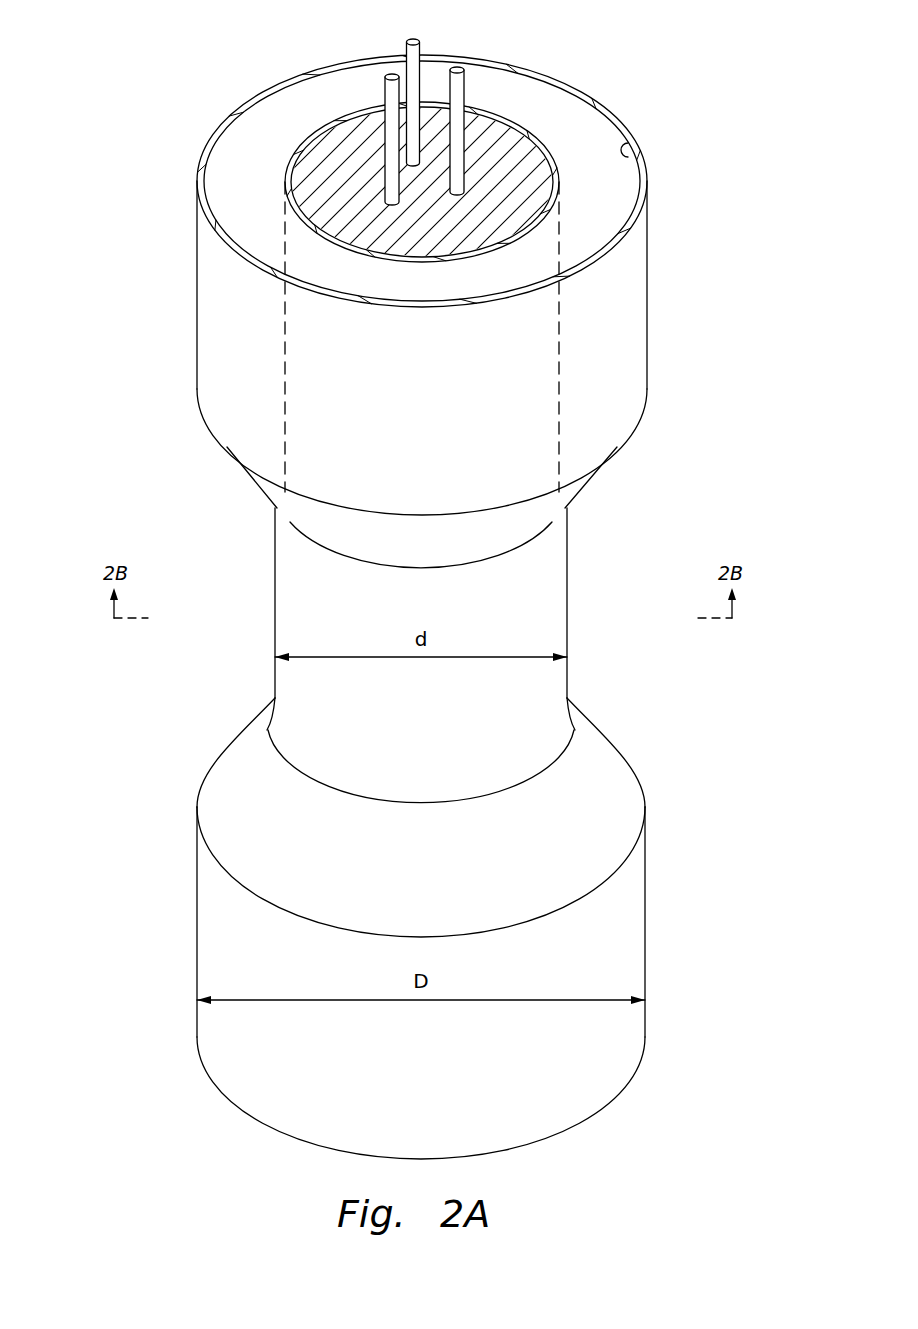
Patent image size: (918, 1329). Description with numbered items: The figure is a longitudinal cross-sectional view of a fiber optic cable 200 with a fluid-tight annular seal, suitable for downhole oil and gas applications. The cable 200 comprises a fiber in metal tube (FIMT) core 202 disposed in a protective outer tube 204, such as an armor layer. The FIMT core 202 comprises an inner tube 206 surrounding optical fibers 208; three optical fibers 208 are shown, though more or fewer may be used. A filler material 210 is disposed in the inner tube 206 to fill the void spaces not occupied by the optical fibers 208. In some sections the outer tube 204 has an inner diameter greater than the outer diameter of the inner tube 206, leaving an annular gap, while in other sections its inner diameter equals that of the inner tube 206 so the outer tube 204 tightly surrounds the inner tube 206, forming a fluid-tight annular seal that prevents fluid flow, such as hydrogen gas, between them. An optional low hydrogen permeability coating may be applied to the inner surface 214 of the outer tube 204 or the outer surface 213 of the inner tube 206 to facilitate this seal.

The fiber optic cable 200 is at (145, 52).
The fiber in metal tube (FIMT) core 202 is at (337, 113).
The protective outer tube 204 is at (222, 122).
The inner tube 206 is at (286, 181).
The optical fibers 208 is at (420, 42).
The filler material 210 is at (318, 207).
The outer surface of the inner tube 213 is at (507, 125).
The inner surface of the outer tube 214 is at (628, 153).